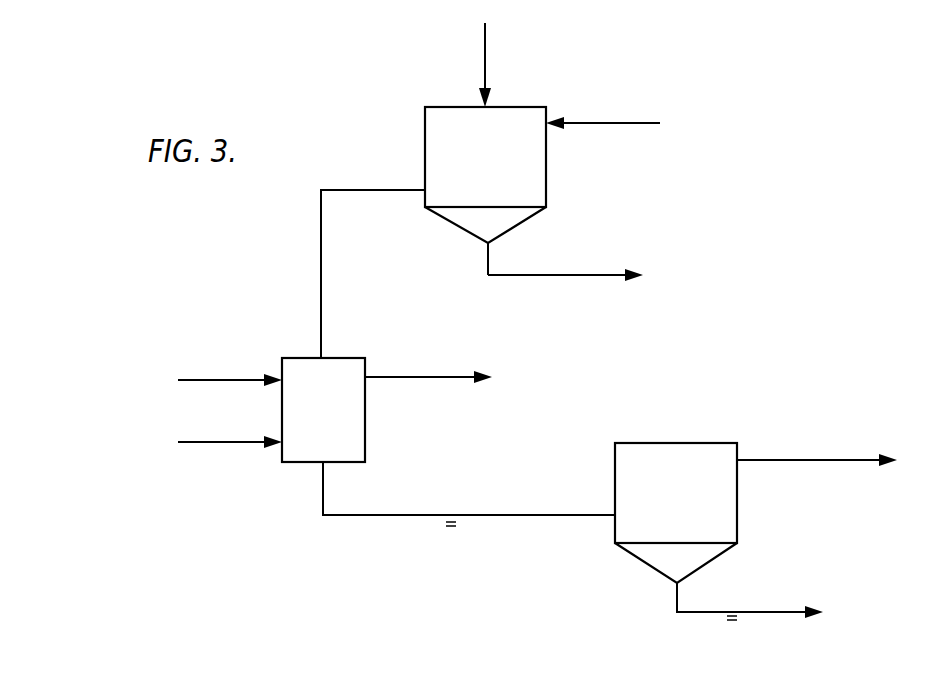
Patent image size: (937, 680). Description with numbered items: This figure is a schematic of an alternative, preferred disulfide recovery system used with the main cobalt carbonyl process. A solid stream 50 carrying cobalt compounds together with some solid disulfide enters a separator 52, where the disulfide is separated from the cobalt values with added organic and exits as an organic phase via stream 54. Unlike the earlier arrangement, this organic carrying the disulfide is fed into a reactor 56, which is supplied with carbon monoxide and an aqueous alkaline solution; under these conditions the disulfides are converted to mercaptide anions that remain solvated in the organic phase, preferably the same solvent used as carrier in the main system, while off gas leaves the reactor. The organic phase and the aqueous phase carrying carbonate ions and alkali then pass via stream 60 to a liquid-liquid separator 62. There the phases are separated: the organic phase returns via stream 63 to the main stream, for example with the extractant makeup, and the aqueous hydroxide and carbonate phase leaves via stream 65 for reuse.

The solid stream 50 is at (483, 56).
The separator 52 is at (505, 171).
The stream 54 is at (318, 208).
The reactor 56 is at (340, 427).
The stream 60 is at (566, 513).
The liquid-liquid separator 62 is at (695, 487).
The stream 63 is at (790, 458).
The stream 65 is at (794, 610).